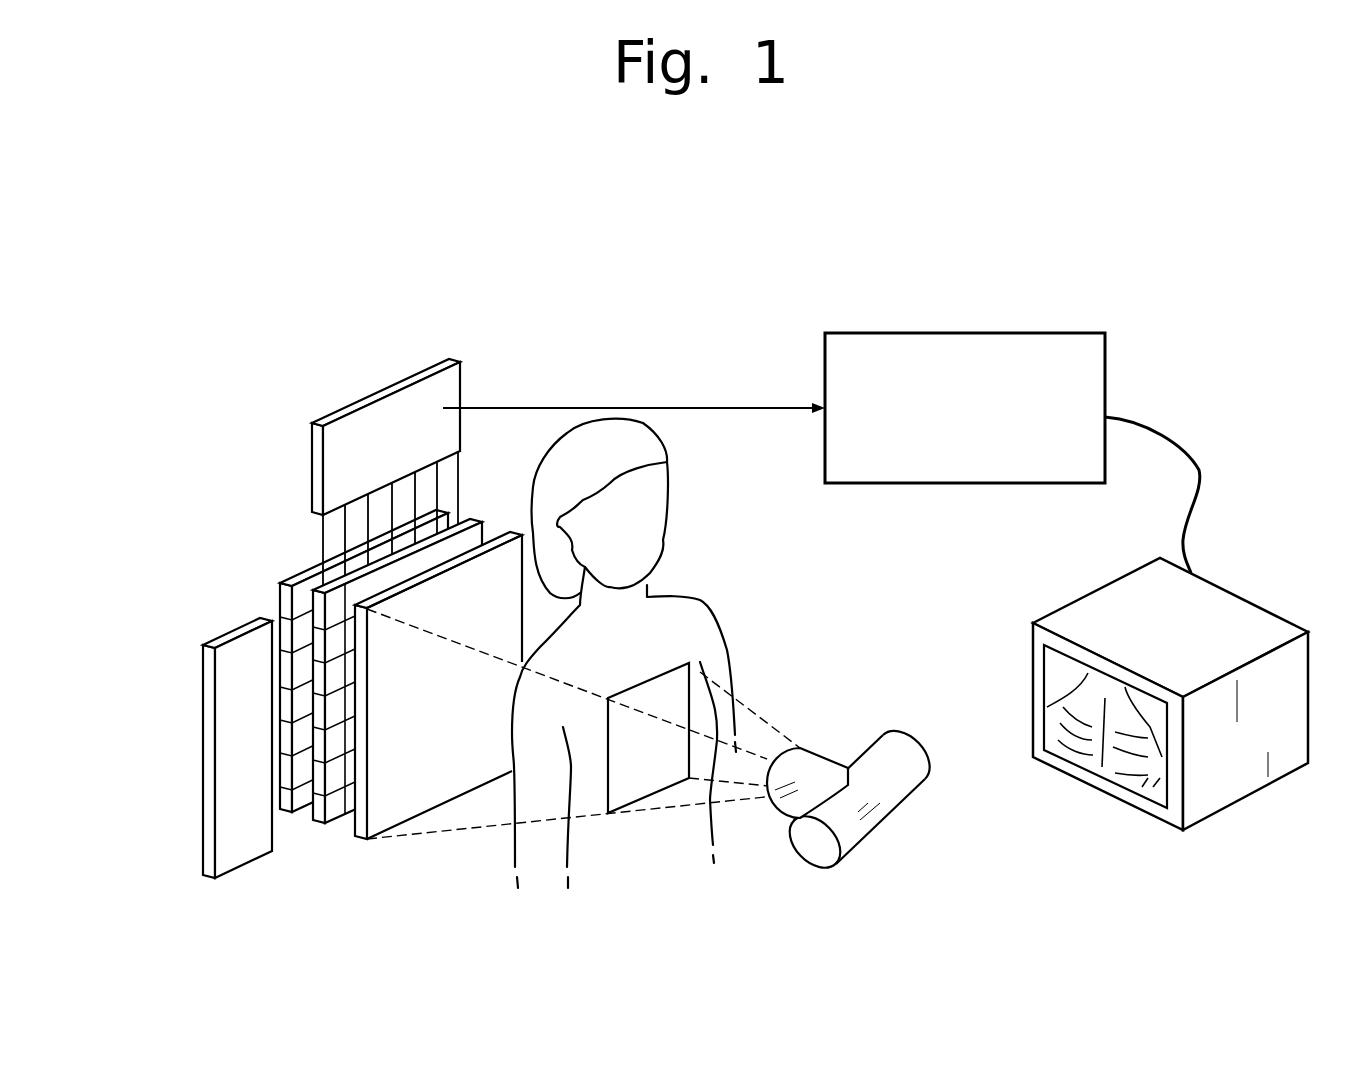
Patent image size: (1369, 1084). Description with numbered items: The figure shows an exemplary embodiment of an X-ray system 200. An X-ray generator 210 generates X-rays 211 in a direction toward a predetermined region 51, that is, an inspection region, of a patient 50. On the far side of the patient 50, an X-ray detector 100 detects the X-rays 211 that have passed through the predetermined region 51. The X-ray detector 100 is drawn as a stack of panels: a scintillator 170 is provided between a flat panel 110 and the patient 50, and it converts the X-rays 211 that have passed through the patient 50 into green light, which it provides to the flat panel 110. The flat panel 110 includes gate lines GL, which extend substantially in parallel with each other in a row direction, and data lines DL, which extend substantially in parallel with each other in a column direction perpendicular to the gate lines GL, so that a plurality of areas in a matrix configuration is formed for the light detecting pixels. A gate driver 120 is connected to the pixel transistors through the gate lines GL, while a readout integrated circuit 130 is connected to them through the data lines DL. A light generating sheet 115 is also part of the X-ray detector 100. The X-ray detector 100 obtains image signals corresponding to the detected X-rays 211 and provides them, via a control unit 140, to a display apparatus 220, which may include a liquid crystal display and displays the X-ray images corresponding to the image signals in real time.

The X-ray system 200 is at (710, 232).
The X-ray detector 100 is at (220, 390).
The flat panel 110 is at (471, 523).
The light generating sheet 115 is at (279, 600).
The gate driver 120 is at (232, 748).
The readout integrated circuit 130 is at (363, 430).
The controller 140 is at (1107, 368).
The scintillator 170 is at (412, 793).
The data lines DL is at (322, 536).
The gate lines GL is at (292, 810).
The patient 50 is at (697, 595).
The predetermined region 51 is at (660, 674).
The X-ray generator 210 is at (889, 805).
The X-rays 211 is at (762, 716).
The display apparatus 220 is at (1247, 620).